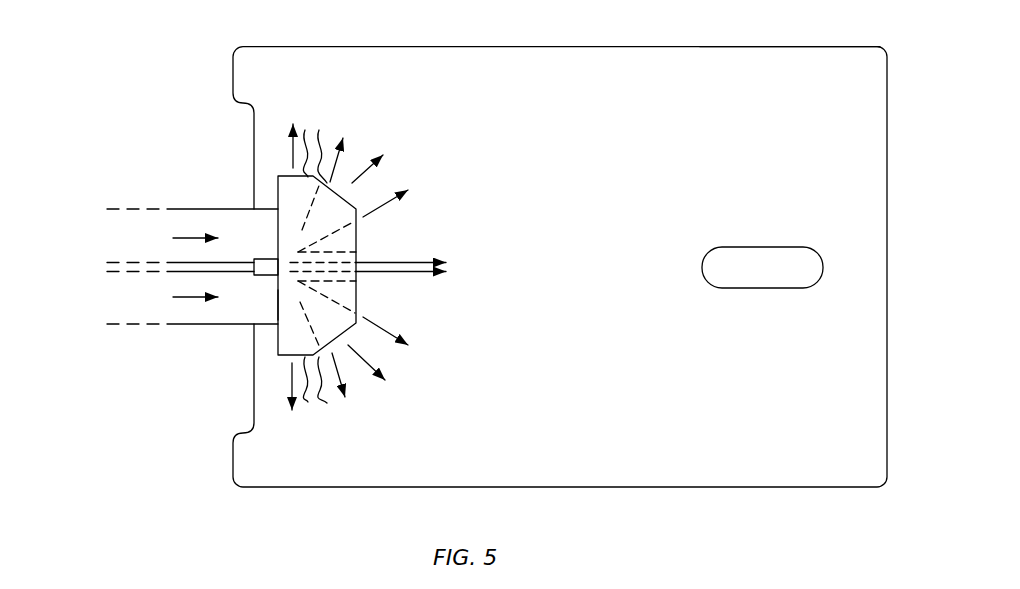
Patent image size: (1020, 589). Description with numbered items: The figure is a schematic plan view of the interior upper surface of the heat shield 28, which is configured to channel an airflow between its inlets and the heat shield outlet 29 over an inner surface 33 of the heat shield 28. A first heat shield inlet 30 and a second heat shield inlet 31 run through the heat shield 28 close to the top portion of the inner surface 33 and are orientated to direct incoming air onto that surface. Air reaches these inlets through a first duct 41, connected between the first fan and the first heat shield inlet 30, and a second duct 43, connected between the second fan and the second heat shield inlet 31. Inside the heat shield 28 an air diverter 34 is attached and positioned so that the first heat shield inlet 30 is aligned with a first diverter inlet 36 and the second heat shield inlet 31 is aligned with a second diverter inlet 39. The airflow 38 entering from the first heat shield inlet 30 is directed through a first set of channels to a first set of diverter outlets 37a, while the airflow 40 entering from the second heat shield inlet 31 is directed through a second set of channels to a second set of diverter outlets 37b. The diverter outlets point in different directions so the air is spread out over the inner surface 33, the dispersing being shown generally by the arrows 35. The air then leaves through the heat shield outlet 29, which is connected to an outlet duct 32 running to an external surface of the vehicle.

The heat shield 28 is at (888, 66).
The heat shield outlet 29 is at (761, 255).
The first heat shield inlet 30 is at (247, 297).
The second heat shield inlet 31 is at (247, 235).
The outlet duct 32 is at (192, 267).
The inner surface 33 is at (798, 58).
The air diverter 34 is at (353, 192).
The arrows 35 is at (338, 155).
The first diverter inlet 36 is at (278, 303).
The first set of diverter outlets 37a is at (398, 232).
The second set of diverter outlets 37b is at (398, 300).
The airflow 38 is at (197, 297).
The second diverter inlet 39 is at (278, 227).
The airflow 40 is at (197, 238).
The first duct 41 is at (117, 297).
The second duct 43 is at (117, 234).